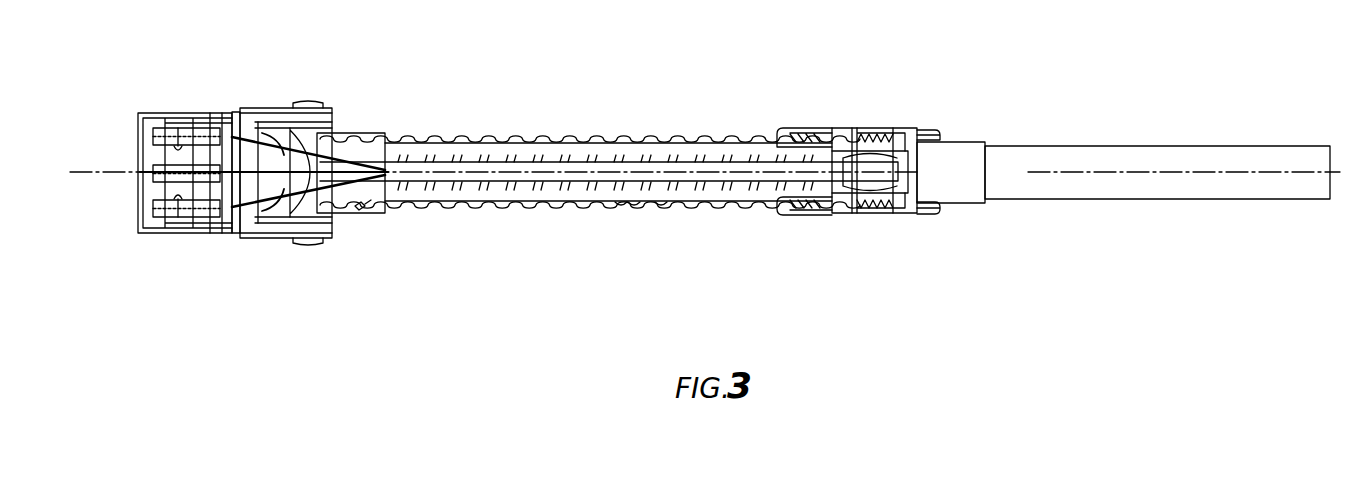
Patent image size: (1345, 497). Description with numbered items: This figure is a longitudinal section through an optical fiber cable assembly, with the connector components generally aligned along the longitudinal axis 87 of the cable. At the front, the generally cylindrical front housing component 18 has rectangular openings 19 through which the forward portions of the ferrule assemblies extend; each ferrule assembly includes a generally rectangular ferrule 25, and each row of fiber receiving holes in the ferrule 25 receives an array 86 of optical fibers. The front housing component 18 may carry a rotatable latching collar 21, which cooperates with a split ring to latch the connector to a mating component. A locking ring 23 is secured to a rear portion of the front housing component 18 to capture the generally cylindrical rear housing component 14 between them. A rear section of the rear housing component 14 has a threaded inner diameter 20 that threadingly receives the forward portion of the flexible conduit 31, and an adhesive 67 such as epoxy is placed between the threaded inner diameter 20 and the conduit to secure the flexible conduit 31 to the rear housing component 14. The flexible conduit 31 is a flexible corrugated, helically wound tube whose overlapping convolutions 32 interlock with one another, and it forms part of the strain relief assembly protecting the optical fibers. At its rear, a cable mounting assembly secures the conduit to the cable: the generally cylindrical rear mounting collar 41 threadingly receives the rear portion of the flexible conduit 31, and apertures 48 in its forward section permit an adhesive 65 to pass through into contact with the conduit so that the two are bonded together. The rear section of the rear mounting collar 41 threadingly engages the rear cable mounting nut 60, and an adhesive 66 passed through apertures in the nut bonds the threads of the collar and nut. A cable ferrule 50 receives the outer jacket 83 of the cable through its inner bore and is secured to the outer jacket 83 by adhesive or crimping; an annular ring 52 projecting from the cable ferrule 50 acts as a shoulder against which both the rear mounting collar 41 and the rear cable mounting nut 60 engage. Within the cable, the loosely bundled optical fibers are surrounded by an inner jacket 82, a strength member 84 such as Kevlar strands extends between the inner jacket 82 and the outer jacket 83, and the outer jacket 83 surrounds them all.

The rear housing component 14 is at (351, 218).
The front housing component 18 is at (208, 118).
The rectangular openings 19 is at (178, 195).
The threaded inner diameter 20 is at (386, 145).
The rotatable latching collar 21 is at (306, 242).
The locking ring 23 is at (336, 122).
The ferrule 25 is at (158, 220).
The flexible conduit 31 is at (547, 206).
The overlapping convolutions 32 is at (668, 206).
The rear mounting collar 41 is at (794, 128).
The apertures 48 is at (823, 128).
The cable ferrule 50 is at (957, 199).
The annular ring 52 is at (913, 204).
The rear cable mounting nut 60 is at (913, 130).
The adhesive 65 is at (820, 208).
The adhesive 66 is at (898, 212).
The adhesive 67 is at (362, 210).
The inner jacket 82 is at (895, 132).
The outer jacket 83 is at (1065, 155).
The strength member 84 is at (865, 190).
The array of optical fibers 86 is at (274, 198).
The longitudinal axis 87 is at (1220, 172).